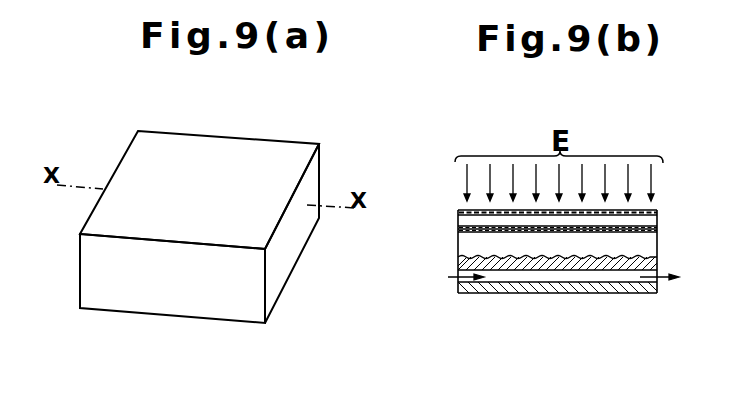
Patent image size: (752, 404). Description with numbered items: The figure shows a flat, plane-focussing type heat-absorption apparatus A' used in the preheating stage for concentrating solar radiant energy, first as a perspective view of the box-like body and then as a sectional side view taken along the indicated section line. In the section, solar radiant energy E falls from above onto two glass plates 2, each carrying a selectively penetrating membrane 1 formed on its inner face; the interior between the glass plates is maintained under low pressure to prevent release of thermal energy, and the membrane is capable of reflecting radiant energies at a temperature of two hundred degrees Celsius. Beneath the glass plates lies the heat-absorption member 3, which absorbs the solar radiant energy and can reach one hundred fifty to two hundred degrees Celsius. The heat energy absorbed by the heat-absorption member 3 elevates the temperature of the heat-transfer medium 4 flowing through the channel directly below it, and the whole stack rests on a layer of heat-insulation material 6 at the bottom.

In FIG. 9B, the selectively penetrating membrane 1 is at (650, 224).
In FIG. 9B, the glass plate 2 is at (640, 211).
In FIG. 9B, the heat-absorption member 3 is at (480, 264).
In FIG. 9B, the heat-transfer medium 4 is at (553, 278).
In FIG. 9B, the heat-insulation material 6 is at (545, 287).
In FIG. 9A, the plane-focussing type heat-absorption apparatus A' is at (199, 202).